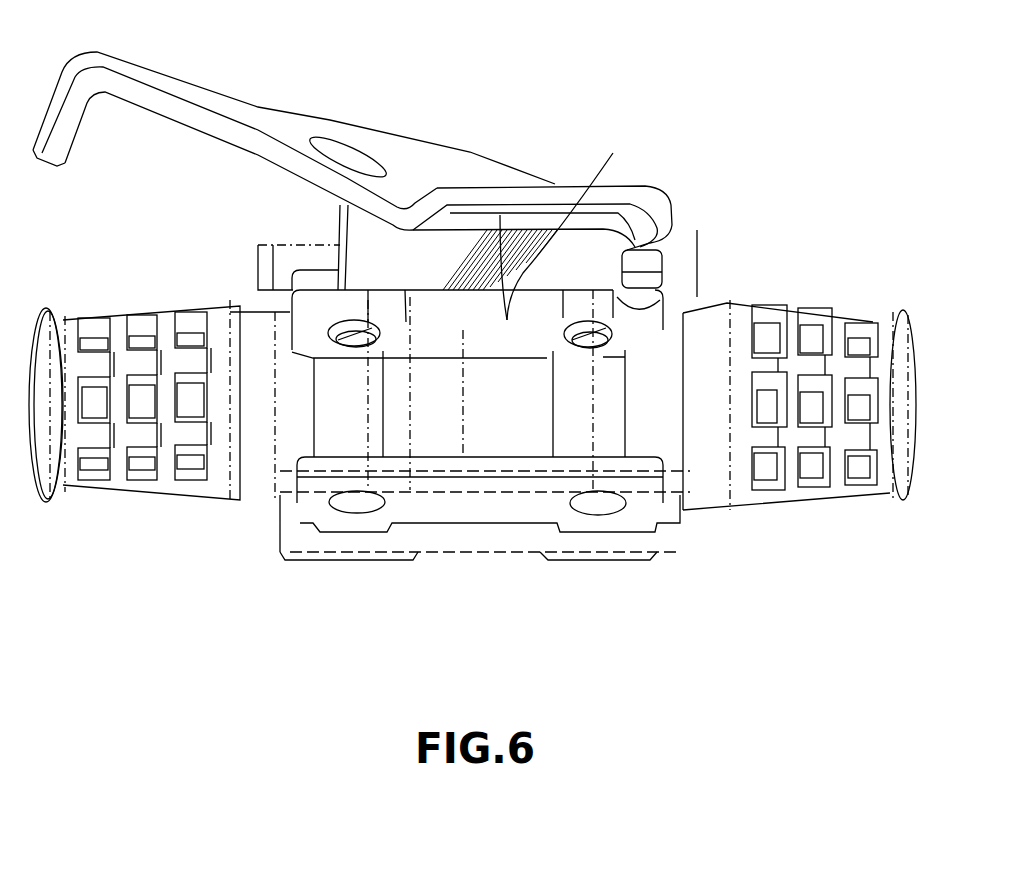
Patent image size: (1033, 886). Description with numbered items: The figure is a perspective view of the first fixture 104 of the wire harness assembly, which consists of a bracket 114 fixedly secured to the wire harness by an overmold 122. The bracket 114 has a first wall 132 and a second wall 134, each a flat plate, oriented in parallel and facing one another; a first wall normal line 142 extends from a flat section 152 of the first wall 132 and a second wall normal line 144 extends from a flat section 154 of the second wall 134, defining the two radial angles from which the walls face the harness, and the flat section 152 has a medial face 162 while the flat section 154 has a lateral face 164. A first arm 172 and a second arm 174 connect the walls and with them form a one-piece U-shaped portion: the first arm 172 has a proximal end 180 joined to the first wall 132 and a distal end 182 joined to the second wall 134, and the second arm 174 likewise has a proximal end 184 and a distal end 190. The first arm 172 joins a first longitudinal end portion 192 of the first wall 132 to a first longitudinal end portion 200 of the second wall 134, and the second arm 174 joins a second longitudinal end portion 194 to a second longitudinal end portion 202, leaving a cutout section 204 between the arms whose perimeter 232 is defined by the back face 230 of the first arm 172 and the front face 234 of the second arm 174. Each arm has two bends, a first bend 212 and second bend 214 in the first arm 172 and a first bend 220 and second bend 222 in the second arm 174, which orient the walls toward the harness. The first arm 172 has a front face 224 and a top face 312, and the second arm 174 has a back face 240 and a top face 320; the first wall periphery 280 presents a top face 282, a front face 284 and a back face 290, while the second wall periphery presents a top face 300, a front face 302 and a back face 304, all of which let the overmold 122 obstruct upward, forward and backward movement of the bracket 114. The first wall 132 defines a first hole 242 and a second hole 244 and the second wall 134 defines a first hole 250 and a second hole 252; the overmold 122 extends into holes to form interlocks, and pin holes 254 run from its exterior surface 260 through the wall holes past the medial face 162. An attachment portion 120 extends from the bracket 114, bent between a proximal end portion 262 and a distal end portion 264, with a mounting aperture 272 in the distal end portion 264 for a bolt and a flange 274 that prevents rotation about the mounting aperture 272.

The first fixture 104 is at (485, 105).
The bracket 114 is at (498, 223).
The attachment portion 120 is at (512, 222).
The overmold 122 is at (905, 320).
The first wall 132 is at (548, 290).
The second wall 134 is at (473, 508).
The first wall normal line 142 is at (430, 522).
The second wall normal line 144 is at (383, 565).
The flat section of the first wall 152 is at (548, 258).
The flat section of the second wall 154 is at (495, 510).
The medial face of the first wall 162 is at (625, 352).
The lateral face of the second wall 164 is at (648, 513).
The first arm 172 is at (337, 428).
The second arm 174 is at (607, 400).
The proximal end of the first arm 180 is at (330, 380).
The distal end of the first arm 182 is at (353, 508).
The proximal end of the second arm 184 is at (607, 387).
The distal end of the second arm 190 is at (610, 527).
The first longitudinal end portion of the first wall 192 is at (317, 303).
The second longitudinal end portion of the first wall 194 is at (683, 313).
The first longitudinal end portion of the second wall 200 is at (333, 470).
The second longitudinal end portion of the second wall 202 is at (645, 510).
The cutout section 204 is at (295, 455).
The first bend of the first arm 212 is at (330, 362).
The second bend of the first arm 214 is at (368, 532).
The first bend of the second arm 220 is at (683, 333).
The second bend of the second arm 222 is at (606, 505).
The front face of the first arm 224 is at (300, 470).
The back face of the first arm 230 is at (350, 470).
The perimeter of the cutout section 232 is at (567, 282).
The front face of the second arm 234 is at (507, 480).
The back face of the second arm 240 is at (628, 433).
The first hole 242 is at (337, 325).
The second hole 244 is at (560, 384).
The first hole of the second wall 250 is at (342, 497).
The second hole of the second wall 252 is at (612, 527).
The pin holes 254 is at (396, 320).
The exterior surface of the overmold 260 is at (640, 280).
The proximal end portion of the attachment portion 262 is at (565, 282).
The distal end portion of the attachment portion 264 is at (422, 158).
The mounting aperture 272 is at (350, 155).
The flange 274 is at (57, 148).
The first wall periphery 280 is at (252, 300).
The top face of the first wall periphery 282 is at (678, 260).
The front face of the first wall periphery 284 is at (272, 330).
The back face of the first wall periphery 290 is at (683, 337).
The top face of the second wall periphery 300 is at (422, 505).
The front face of the second wall periphery 302 is at (282, 478).
The back face of the second wall periphery 304 is at (662, 503).
The top face of the first arm 312 is at (333, 408).
The top face of the second arm 320 is at (522, 523).